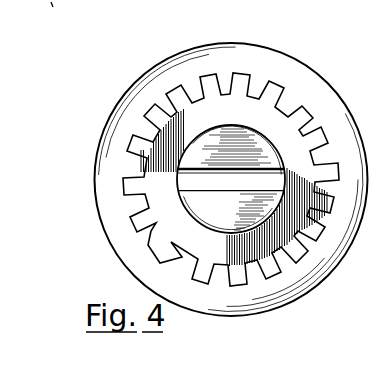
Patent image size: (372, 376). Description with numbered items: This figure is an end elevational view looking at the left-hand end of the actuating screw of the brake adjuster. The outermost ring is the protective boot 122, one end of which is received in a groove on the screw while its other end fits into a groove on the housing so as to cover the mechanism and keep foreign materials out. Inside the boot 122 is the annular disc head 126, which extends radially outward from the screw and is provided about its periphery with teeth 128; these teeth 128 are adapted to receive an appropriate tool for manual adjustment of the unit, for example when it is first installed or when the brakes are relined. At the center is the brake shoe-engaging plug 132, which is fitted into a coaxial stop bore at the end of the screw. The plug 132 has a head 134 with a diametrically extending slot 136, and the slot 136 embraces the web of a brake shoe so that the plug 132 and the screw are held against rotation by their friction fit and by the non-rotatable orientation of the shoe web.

The protective boot 122 is at (203, 45).
The annular disc head 126 is at (173, 216).
The teeth 128 is at (146, 148).
The brake shoe-engaging plug 132 is at (267, 127).
The head 134 is at (179, 190).
The slot 136 is at (279, 184).